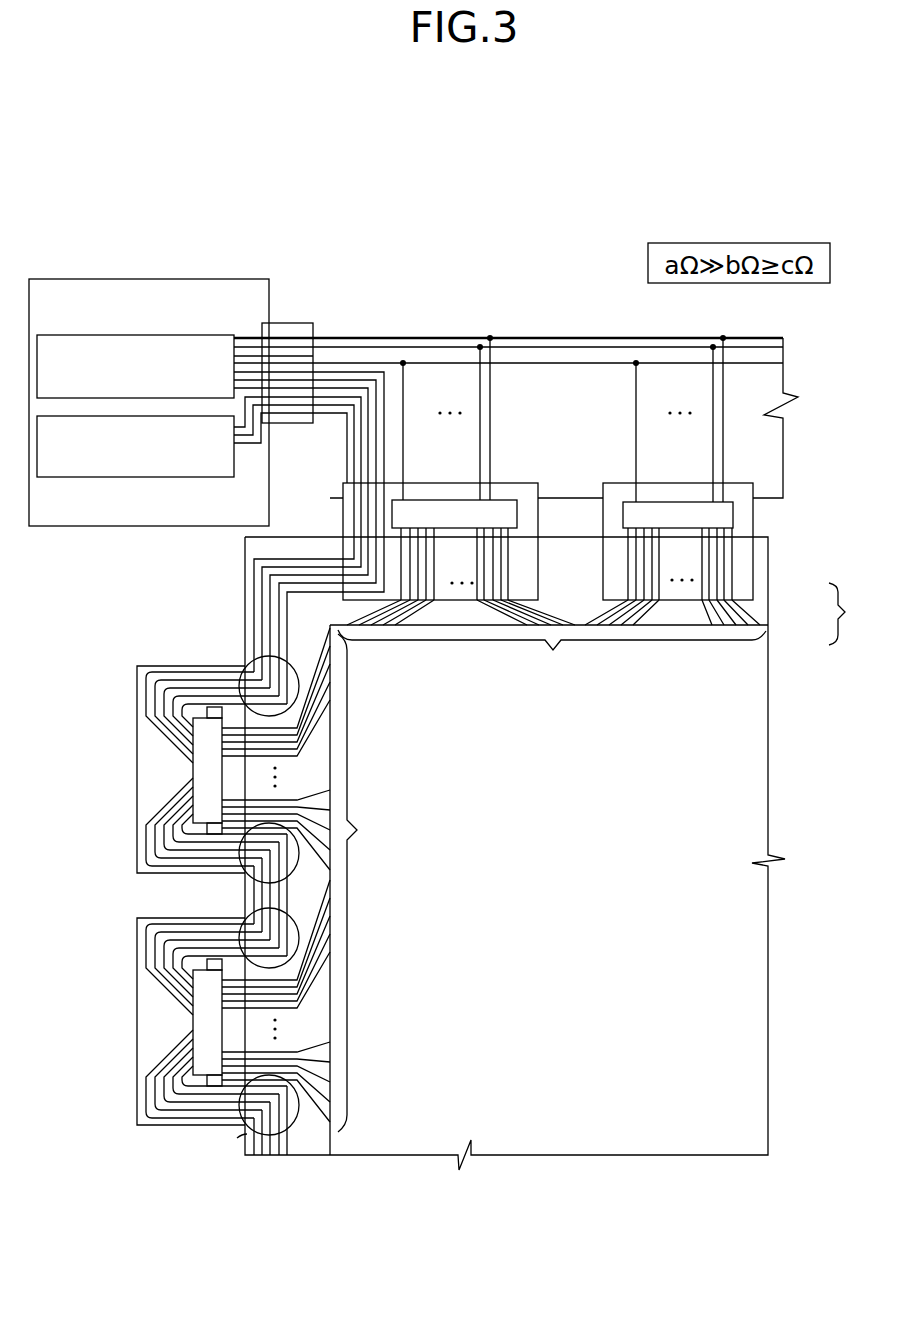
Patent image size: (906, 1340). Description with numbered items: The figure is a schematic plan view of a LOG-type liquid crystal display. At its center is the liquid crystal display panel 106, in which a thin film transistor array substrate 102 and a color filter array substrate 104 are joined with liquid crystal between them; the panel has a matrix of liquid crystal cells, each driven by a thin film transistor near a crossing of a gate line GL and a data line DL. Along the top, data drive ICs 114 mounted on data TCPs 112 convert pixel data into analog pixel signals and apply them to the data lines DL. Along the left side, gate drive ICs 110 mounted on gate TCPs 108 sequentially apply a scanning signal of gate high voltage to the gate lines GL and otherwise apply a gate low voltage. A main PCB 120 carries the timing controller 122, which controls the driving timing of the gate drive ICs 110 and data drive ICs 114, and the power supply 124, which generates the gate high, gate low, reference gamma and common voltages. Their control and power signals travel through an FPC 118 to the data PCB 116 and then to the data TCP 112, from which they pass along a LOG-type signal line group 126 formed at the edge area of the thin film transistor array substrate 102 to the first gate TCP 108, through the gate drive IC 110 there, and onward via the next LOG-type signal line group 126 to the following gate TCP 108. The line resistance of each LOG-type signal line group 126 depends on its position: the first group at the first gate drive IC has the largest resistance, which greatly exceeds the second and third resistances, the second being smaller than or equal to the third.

The thin film transistor array substrate 102 is at (768, 586).
The color filter array substrate 104 is at (768, 648).
The liquid crystal display panel 106 is at (859, 614).
The gate TCP 108 is at (204, 667).
The gate drive IC 110 is at (210, 768).
The data TCP 112 is at (755, 503).
The data drive IC 114 is at (733, 522).
The data PCB 116 is at (700, 337).
The FPC 118 is at (318, 325).
The main PCB 120 is at (229, 278).
The timing controller 122 is at (175, 334).
The power supply 124 is at (176, 478).
The LOG-type signal line group 126 is at (319, 548).